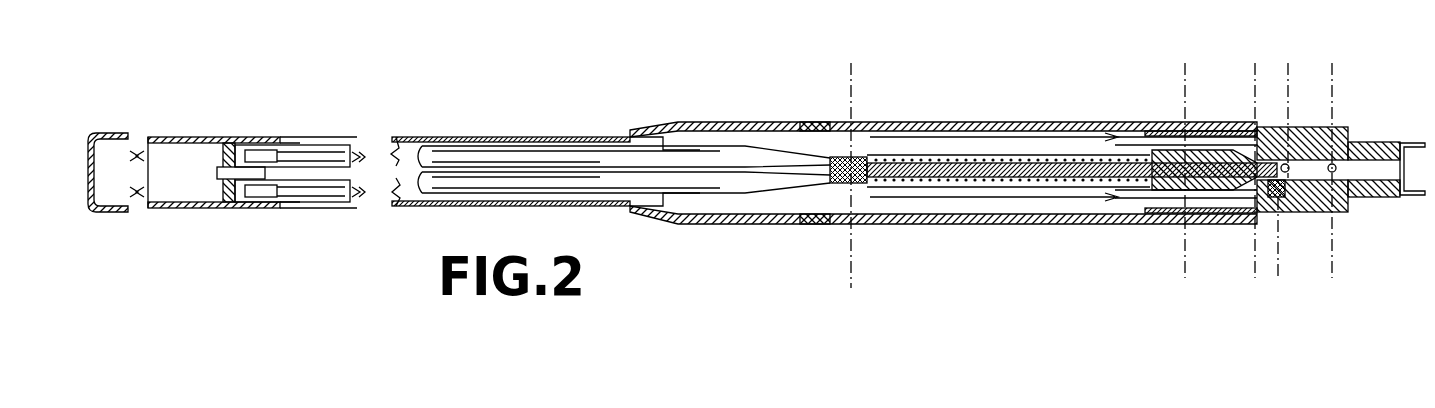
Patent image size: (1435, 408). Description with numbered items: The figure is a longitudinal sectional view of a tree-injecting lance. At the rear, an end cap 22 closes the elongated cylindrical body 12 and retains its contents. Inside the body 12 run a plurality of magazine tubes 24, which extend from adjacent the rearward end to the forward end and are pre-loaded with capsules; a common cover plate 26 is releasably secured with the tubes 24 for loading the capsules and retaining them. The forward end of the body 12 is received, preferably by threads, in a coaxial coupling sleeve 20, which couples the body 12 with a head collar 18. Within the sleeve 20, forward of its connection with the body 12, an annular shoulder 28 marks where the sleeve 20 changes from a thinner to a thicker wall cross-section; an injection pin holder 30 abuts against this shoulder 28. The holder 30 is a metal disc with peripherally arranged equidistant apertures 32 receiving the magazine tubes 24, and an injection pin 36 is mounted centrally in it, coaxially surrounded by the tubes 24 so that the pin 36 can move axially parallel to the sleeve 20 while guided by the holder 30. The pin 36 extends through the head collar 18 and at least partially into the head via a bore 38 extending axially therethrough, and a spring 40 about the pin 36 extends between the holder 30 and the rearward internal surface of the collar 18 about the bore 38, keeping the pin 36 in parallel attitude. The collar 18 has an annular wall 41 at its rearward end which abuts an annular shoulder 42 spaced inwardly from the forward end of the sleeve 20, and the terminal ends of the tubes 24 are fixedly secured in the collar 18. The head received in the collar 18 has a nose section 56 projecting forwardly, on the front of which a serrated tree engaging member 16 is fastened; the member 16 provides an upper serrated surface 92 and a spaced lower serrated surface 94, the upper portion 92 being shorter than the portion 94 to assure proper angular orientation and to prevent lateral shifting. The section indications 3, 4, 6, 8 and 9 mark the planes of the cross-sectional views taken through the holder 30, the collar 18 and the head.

The elongated cylindrical body 12 is at (413, 137).
The serrated tree engaging member 16 is at (1345, 205).
The head collar 18 is at (1207, 215).
The coupling sleeve 20 is at (930, 224).
The end cap 22 is at (108, 150).
The magazine tubes 24 is at (315, 190).
The common cover plate 26 is at (233, 143).
The annular shoulder 28 is at (827, 224).
The injection pin holder 30 is at (901, 118).
The apertures 32 is at (863, 145).
The injection pin 36 is at (1010, 175).
The bore 38 is at (1303, 170).
The spring 40 is at (1028, 165).
The annular wall 41 is at (1150, 130).
The annular shoulder 42 is at (1160, 132).
The nose section 56 is at (1373, 137).
The upper serrated tree engaging surface 92 is at (1410, 143).
The lower serrated tree engaging surface 94 is at (1415, 197).
The section line 3- 3 is at (812, 288).
The section line 4- 4 is at (1160, 278).
The section line 6- 6 is at (1233, 278).
The section line 8- 8 is at (1258, 278).
The section line 9- 9 is at (1305, 278).